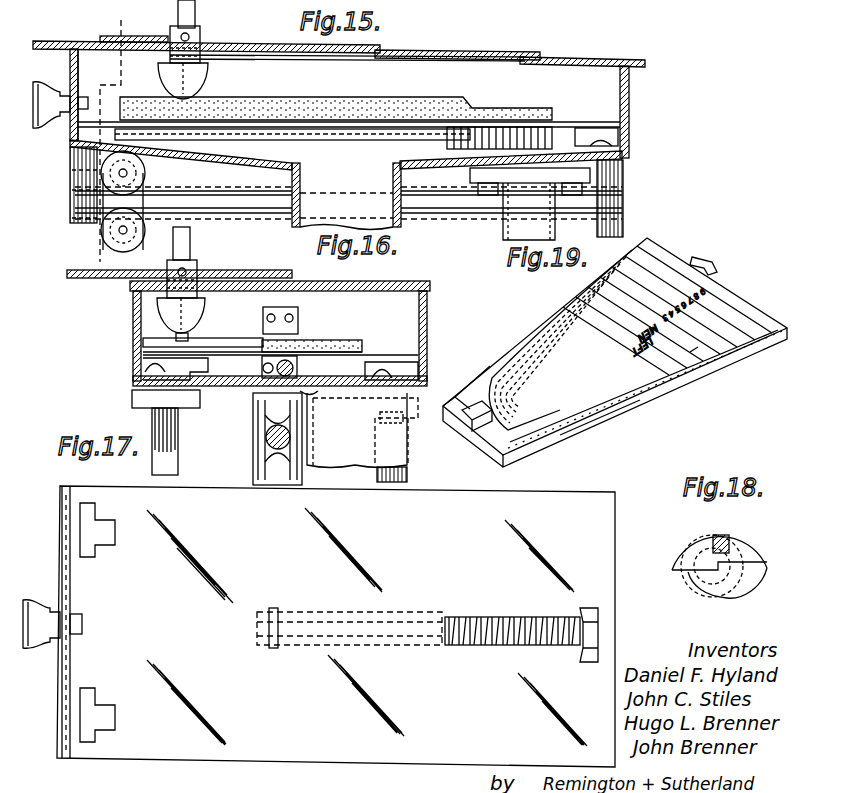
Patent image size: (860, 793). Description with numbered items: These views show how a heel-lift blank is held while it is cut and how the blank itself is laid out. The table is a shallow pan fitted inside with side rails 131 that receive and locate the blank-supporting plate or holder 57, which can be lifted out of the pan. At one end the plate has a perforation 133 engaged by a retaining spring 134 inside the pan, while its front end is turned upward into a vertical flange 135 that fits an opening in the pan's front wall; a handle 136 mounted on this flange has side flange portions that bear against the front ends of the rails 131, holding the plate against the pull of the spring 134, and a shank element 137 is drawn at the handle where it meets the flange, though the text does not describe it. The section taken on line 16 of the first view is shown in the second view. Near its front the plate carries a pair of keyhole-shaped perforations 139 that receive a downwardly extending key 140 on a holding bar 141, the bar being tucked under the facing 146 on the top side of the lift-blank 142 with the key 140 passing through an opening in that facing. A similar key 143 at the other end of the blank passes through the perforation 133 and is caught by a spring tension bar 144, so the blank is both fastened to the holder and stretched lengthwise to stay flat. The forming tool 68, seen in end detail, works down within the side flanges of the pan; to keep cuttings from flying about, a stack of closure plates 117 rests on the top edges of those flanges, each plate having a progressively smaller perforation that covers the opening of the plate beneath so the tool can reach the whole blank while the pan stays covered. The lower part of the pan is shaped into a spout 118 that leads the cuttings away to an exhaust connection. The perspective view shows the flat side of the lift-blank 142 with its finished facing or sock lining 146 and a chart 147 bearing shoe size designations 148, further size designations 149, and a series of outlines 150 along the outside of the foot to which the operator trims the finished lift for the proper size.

In FIG. 15, the section line 16— 16 is at (137, 14).
In FIG. 15, the blank-supporting plate or holder 57 is at (208, 161).
In FIG. 17, the blank-supporting plate or holder 57 is at (275, 752).
In FIG. 15, the forming tool 68 is at (205, 79).
In FIG. 16, the forming tool 68 is at (197, 312).
In FIG. 18, the forming tool 68 is at (760, 571).
In FIG. 15, the closure plates 117 is at (352, 52).
In FIG. 16, the closure plates 117 is at (236, 281).
In FIG. 15, the spout 118 is at (293, 210).
In FIG. 16, the spout 118 is at (402, 450).
In FIG. 15, the side rails 131 is at (72, 152).
In FIG. 16, the side rails 131 is at (135, 366).
In FIG. 17, the perforation 133 is at (590, 608).
In FIG. 15, the retaining spring 134 is at (603, 132).
In FIG. 16, the retaining spring 134 is at (298, 331).
In FIG. 15, the vertical flange 135 is at (80, 92).
In FIG. 17, the vertical flange 135 is at (66, 573).
In FIG. 15, the handle 136 is at (50, 96).
In FIG. 17, the handle 136 is at (42, 610).
In FIG. 15, the knob shank 137 is at (66, 118).
In FIG. 17, the knob shank 137 is at (58, 640).
In FIG. 17, the perforations 139 is at (95, 516).
In FIG. 19, the key 140 is at (474, 406).
In FIG. 15, the holding bar 141 is at (124, 104).
In FIG. 19, the holding bar 141 is at (476, 432).
In FIG. 15, the lift-blank 142 is at (266, 98).
In FIG. 16, the lift-blank 142 is at (346, 342).
In FIG. 19, the lift-blank 142 is at (762, 343).
In FIG. 15, the key 143 is at (547, 124).
In FIG. 19, the key 143 is at (708, 263).
In FIG. 15, the spring tension bar 144 is at (408, 146).
In FIG. 17, the spring tension bar 144 is at (500, 647).
In FIG. 19, the facing or sock lining 146 is at (641, 390).
In FIG. 19, the chart 147 is at (738, 303).
In FIG. 19, the shoe size designations 148 is at (684, 348).
In FIG. 19, the size designations 149 is at (645, 295).
In FIG. 19, the outlines 150 is at (573, 308).